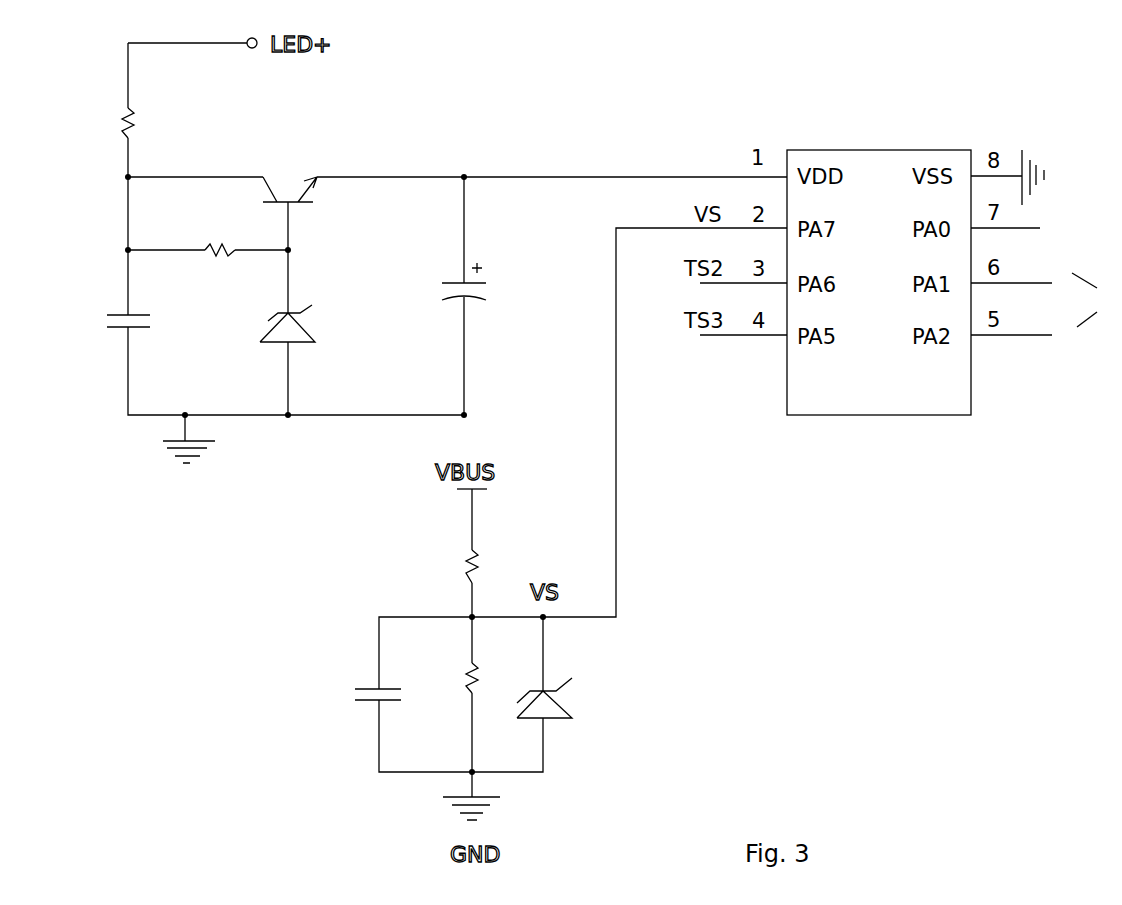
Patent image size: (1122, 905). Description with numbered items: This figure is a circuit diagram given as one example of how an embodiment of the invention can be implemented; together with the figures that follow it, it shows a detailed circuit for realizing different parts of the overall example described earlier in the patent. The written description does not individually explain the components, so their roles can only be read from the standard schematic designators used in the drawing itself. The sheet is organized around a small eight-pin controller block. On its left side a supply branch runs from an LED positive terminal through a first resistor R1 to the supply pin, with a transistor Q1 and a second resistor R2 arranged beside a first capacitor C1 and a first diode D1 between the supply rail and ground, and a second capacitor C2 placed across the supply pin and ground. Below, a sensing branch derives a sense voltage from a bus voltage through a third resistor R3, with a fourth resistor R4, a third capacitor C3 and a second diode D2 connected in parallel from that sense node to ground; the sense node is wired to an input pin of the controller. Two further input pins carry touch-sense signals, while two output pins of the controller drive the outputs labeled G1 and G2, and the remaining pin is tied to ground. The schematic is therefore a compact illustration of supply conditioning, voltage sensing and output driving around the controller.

The resistor R1 is at (150, 120).
The resistor R2 is at (220, 233).
The resistor R3 is at (445, 566).
The resistor R4 is at (455, 679).
The capacitor C1 is at (150, 328).
The capacitor C2 is at (489, 283).
The capacitor C3 is at (353, 698).
The zener diode D1 is at (310, 327).
The zener diode D2 is at (566, 702).
The transistor Q1 is at (309, 198).
The output G1 is at (1065, 321).
The output G2 is at (1067, 272).